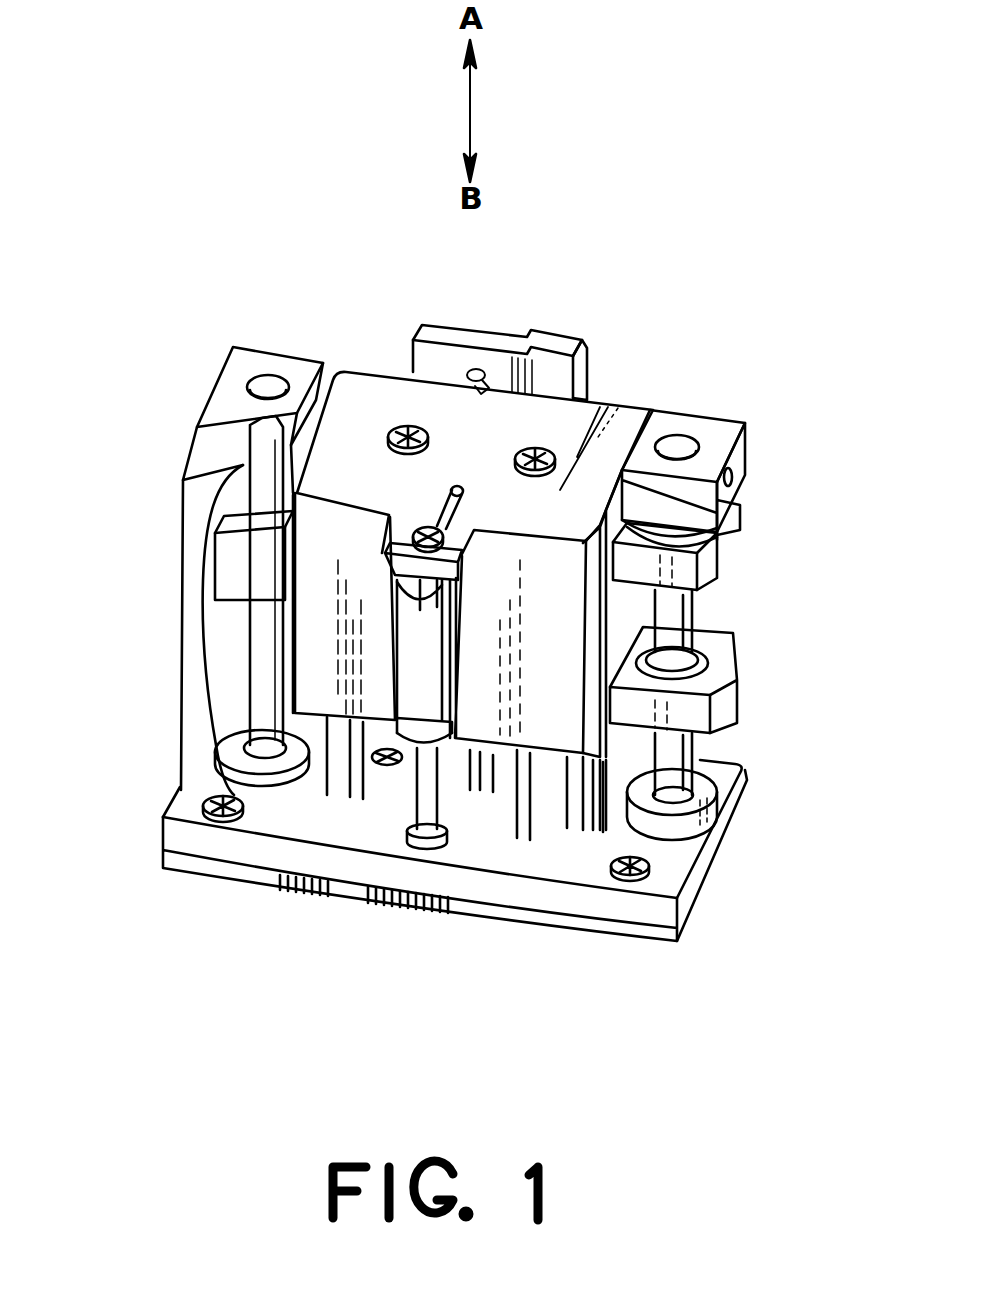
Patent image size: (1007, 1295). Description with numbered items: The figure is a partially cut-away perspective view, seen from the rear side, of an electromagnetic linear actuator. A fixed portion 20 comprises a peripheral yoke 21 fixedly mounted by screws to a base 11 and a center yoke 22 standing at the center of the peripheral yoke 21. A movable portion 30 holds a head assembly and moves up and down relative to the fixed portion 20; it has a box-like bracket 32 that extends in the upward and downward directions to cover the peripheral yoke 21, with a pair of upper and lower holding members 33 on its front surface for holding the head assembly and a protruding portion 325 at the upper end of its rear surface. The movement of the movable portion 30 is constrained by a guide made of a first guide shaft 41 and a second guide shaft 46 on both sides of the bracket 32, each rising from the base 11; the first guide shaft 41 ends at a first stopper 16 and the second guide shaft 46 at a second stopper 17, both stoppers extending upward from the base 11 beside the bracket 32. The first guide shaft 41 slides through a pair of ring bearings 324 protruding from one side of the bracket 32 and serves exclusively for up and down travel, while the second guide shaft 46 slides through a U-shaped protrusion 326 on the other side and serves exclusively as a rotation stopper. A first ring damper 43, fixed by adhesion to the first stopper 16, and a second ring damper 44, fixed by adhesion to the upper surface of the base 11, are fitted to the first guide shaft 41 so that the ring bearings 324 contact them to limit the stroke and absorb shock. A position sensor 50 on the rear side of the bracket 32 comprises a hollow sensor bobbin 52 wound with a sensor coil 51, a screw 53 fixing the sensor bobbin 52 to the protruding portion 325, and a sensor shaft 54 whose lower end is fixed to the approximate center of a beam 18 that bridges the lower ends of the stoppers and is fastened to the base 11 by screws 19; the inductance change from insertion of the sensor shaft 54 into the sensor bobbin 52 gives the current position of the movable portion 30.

The base 11 is at (730, 797).
The first stopper 16 is at (715, 432).
The second stopper 17 is at (198, 525).
The beam 18 is at (460, 885).
The screws 19 is at (205, 820).
The fixed portion 20 is at (313, 787).
The peripheral yoke 21 is at (562, 835).
The center yoke 22 is at (522, 790).
The movable portion 30 is at (603, 378).
The bracket 32 is at (375, 385).
The holding members 33 is at (470, 340).
The first guide shaft 41 is at (697, 620).
The first ring damper 43 is at (733, 535).
The second ring damper 44 is at (718, 828).
The second guide shaft 46 is at (243, 655).
The position sensor 50 is at (390, 790).
The sensor coil 51 is at (447, 647).
The sensor bobbin 52 is at (453, 728).
The screw 53 is at (445, 550).
The sensor shaft 54 is at (455, 765).
The ring bearings 324 is at (727, 557).
The protruding portion 325 is at (380, 573).
The U-shaped protrusion 326 is at (230, 577).